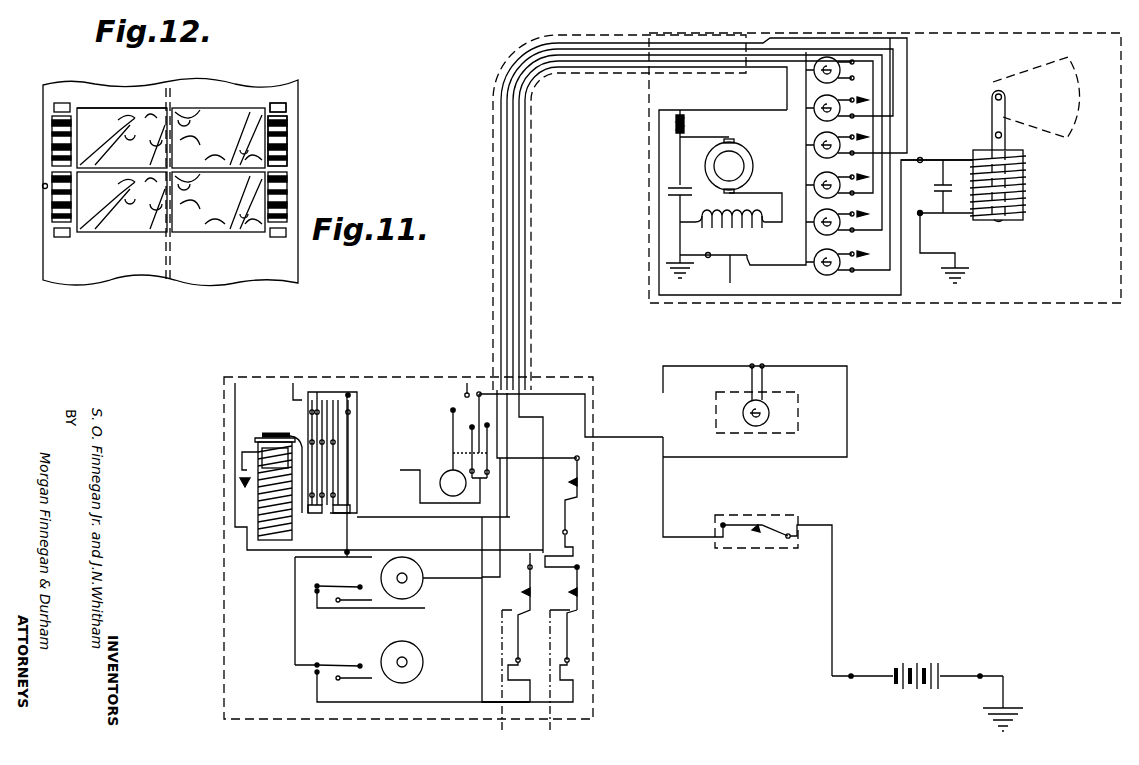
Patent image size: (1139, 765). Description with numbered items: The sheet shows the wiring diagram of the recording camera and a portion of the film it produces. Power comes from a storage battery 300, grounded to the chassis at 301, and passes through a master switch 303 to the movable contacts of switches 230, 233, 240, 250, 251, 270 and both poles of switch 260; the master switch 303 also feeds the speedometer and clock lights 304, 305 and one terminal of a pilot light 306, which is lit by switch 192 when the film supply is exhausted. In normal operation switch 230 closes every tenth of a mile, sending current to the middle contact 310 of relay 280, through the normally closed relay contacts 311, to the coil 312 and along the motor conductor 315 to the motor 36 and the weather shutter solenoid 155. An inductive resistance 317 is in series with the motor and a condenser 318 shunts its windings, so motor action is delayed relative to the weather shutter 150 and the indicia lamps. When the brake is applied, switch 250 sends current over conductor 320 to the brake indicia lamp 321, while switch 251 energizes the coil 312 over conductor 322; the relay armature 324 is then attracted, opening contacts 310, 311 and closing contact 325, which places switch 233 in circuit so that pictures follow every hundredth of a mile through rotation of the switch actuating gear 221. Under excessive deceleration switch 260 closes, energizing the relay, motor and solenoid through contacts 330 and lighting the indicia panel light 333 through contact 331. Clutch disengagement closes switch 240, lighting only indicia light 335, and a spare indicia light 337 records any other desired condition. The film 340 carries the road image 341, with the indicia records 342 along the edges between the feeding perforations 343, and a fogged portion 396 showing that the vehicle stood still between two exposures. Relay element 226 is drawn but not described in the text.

In FIG. 12, the film 340 is at (298, 171).
In FIG. 12, the road image 341 is at (143, 108).
In FIG. 12, the indicia records 342 is at (288, 136).
In FIG. 12, the film feeding perforations 343 is at (288, 108).
In FIG. 12, the fogged portion 396 is at (44, 189).
In FIG. 11, the conductor 320 is at (878, 130).
In FIG. 11, the motor conductor 315 is at (745, 110).
In FIG. 11, the inductive resistance 317 is at (684, 124).
In FIG. 11, the condenser 318 is at (676, 195).
In FIG. 11, the motor 36 is at (753, 159).
In FIG. 11, the switch 192 is at (730, 258).
In FIG. 11, the spare indicia light 337 is at (814, 80).
In FIG. 11, the indicia panel light 333 is at (814, 114).
In FIG. 11, the speedometer light 304 is at (814, 150).
In FIG. 11, the brake indicia lamp 321 is at (814, 186).
In FIG. 11, the indicia light 335 is at (814, 230).
In FIG. 11, the clock light 305 is at (815, 270).
In FIG. 11, the weather shutter solenoid 155 is at (1015, 222).
In FIG. 11, the weather shutter 150 is at (1022, 74).
In FIG. 11, the relay 280 is at (272, 543).
In FIG. 11, the relay armature 324 is at (262, 435).
In FIG. 11, the coil 312 is at (257, 495).
In FIG. 11, the relay contacts 311 is at (303, 432).
In FIG. 11, the middle contact 310 is at (318, 506).
In FIG. 11, the contact 325 is at (338, 492).
In FIG. 11, the conductor 322 is at (396, 551).
In FIG. 11, the switch 270 is at (440, 430).
In FIG. 11, the switch 260 is at (470, 432).
In FIG. 11, the contact 331 is at (484, 430).
In FIG. 11, the contacts 330 is at (453, 453).
In FIG. 11, the switch 251 is at (566, 521).
In FIG. 11, the switch 240 is at (520, 617).
In FIG. 11, the switch 250 is at (568, 628).
In FIG. 11, the relay coil 226 is at (424, 578).
In FIG. 11, the switch actuating gear 221 is at (423, 656).
In FIG. 11, the switch 230 is at (360, 585).
In FIG. 11, the switch 233 is at (360, 664).
In FIG. 11, the pilot light 306 is at (768, 406).
In FIG. 11, the master switch 303 is at (762, 541).
In FIG. 11, the storage battery 300 is at (912, 665).
In FIG. 11, the ground 301 is at (1018, 712).